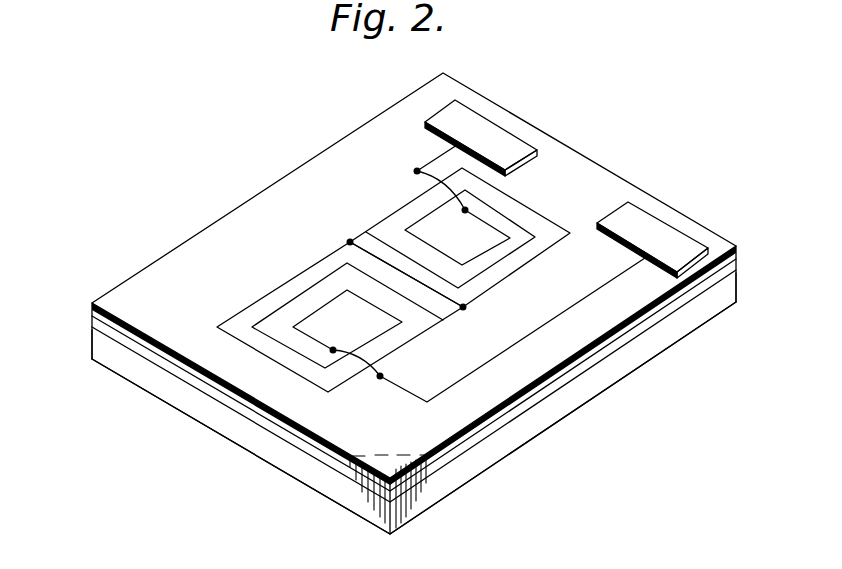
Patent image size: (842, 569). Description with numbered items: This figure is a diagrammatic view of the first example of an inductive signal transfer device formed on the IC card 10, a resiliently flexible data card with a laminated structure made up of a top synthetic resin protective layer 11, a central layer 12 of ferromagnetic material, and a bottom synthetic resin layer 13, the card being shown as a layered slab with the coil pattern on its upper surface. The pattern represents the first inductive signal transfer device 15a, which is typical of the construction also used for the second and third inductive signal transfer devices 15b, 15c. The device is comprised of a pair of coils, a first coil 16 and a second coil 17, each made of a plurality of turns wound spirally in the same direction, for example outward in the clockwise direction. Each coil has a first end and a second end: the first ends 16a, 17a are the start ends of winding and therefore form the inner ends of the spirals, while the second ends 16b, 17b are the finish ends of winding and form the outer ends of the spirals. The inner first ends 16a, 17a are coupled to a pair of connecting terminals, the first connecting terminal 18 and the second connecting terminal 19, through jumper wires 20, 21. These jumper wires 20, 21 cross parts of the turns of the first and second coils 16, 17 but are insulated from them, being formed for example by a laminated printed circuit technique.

The IC card 10 is at (255, 469).
The top synthetic resin protective layer 11 is at (92, 311).
The central layer 12 is at (105, 328).
The bottom synthetic resin layer 13 is at (155, 375).
The first inductive signal transfer device 15a is at (340, 227).
The second inductive signal transfer device 15b is at (340, 317).
The third inductive signal transfer device 15c is at (460, 237).
The first coil 16 is at (360, 339).
The first end of first coil 16a is at (331, 353).
The second end of first coil 16b is at (348, 245).
The second coil 17 is at (470, 246).
The first end of second coil 17a is at (468, 209).
The second end of second coil 17b is at (467, 307).
The first connecting terminal 18 is at (640, 220).
The second connecting terminal 19 is at (478, 118).
The jumper wire 20 is at (368, 357).
The jumper wire 21 is at (416, 175).